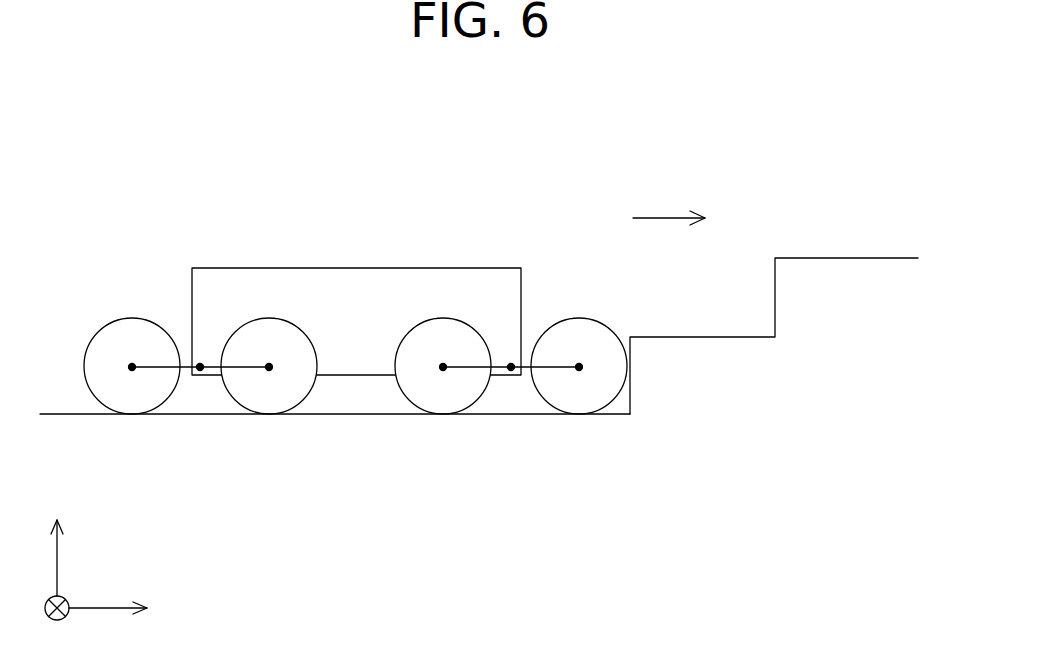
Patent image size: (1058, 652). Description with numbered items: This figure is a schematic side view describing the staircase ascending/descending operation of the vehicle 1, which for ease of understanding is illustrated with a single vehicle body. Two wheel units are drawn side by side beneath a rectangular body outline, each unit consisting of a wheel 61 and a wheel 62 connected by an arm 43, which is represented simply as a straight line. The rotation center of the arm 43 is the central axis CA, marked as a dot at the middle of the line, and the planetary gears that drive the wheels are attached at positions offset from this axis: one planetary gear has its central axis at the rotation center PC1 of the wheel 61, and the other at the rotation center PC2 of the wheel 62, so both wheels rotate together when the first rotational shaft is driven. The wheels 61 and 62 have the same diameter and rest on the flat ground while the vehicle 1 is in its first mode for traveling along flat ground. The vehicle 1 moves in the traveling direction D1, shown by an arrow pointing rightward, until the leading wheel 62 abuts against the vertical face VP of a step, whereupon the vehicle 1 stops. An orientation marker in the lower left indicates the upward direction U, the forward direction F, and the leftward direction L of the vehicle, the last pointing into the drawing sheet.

The vehicle 1 is at (452, 145).
The arm 43 is at (155, 363).
The wheel 61 is at (128, 328).
The wheel 62 is at (269, 335).
The rotation center of the wheel 61 PC1 is at (132, 372).
The rotation center of the wheel 62 PC2 is at (269, 372).
The central axis CA is at (200, 372).
The vertical face VP is at (620, 407).
The traveling direction D1 is at (660, 216).
The upward direction U is at (57, 540).
The forward direction F is at (119, 609).
The leftward direction L is at (47, 621).